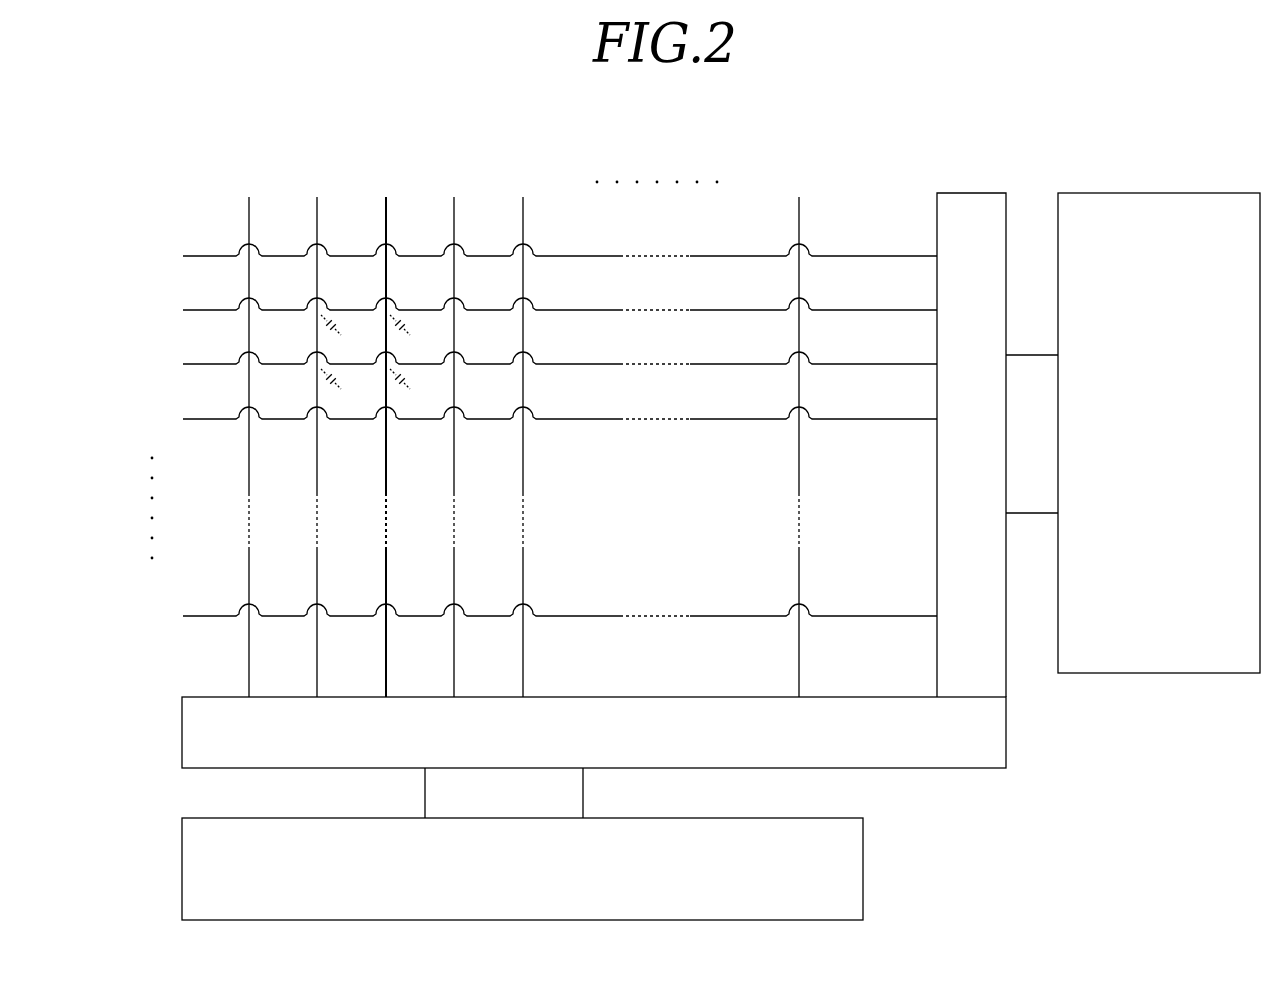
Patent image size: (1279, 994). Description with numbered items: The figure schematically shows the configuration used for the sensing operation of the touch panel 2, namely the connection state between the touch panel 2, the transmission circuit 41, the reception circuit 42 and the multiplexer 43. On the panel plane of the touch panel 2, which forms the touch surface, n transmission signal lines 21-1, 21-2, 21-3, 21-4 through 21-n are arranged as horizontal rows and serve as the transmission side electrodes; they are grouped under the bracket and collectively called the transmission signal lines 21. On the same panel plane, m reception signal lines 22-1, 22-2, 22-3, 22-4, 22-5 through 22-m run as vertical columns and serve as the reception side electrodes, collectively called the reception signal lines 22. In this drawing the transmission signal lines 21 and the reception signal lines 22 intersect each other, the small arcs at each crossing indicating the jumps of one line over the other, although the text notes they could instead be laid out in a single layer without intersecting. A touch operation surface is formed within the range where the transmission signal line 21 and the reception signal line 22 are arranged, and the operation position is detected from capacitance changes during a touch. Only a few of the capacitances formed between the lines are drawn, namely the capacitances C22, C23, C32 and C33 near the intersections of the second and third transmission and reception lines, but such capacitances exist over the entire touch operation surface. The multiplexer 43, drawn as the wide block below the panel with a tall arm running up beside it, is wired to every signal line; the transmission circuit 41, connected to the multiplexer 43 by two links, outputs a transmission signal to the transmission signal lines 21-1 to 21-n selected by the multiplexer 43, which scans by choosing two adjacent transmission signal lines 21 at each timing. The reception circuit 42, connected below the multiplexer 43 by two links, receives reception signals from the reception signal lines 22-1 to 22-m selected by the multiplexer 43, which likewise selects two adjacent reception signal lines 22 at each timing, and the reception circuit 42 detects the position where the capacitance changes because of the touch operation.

The touch panel 2 is at (192, 225).
The transmission signal line 21 is at (140, 224).
The transmission signal line 21-1 is at (535, 254).
The transmission signal line 21-2 is at (535, 308).
The transmission signal line 21-3 is at (535, 362).
The transmission signal line 21-4 is at (535, 417).
The transmission signal line 21-n is at (535, 614).
The reception signal line 22 is at (843, 170).
The reception signal line 22-1 is at (249, 436).
The reception signal line 22-2 is at (317, 436).
The reception signal line 22-3 is at (386, 436).
The reception signal line 22-4 is at (454, 436).
The reception signal line 22-5 is at (523, 436).
The reception signal line 22-m is at (799, 436).
The capacitance C22 is at (345, 333).
The capacitance C23 is at (414, 333).
The capacitance C32 is at (345, 387).
The capacitance C33 is at (414, 387).
The transmission circuit 41 is at (1115, 675).
The reception circuit 42 is at (863, 873).
The multiplexer 43 is at (182, 728).